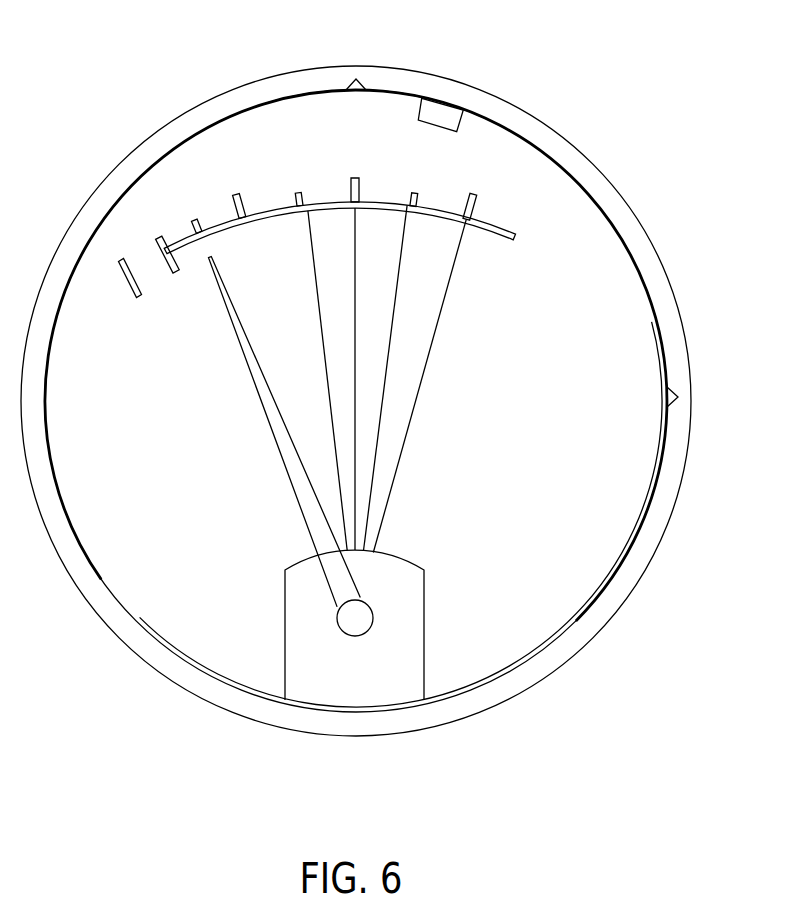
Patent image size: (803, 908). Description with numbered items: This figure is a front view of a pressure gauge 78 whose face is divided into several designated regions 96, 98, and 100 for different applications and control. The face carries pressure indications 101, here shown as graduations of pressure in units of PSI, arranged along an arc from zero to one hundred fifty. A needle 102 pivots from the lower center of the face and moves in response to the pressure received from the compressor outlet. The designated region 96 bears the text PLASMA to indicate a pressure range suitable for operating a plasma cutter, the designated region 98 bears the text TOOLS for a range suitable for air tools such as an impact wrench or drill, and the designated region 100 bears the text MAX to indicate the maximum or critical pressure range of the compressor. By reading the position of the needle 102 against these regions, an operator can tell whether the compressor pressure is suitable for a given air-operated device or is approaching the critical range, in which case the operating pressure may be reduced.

The pressure gauge 78 is at (598, 167).
The designated region 96 is at (325, 213).
The designated region 98 is at (398, 213).
The designated region 100 is at (439, 210).
The pressure indications 101 is at (215, 226).
The needle 102 is at (302, 492).